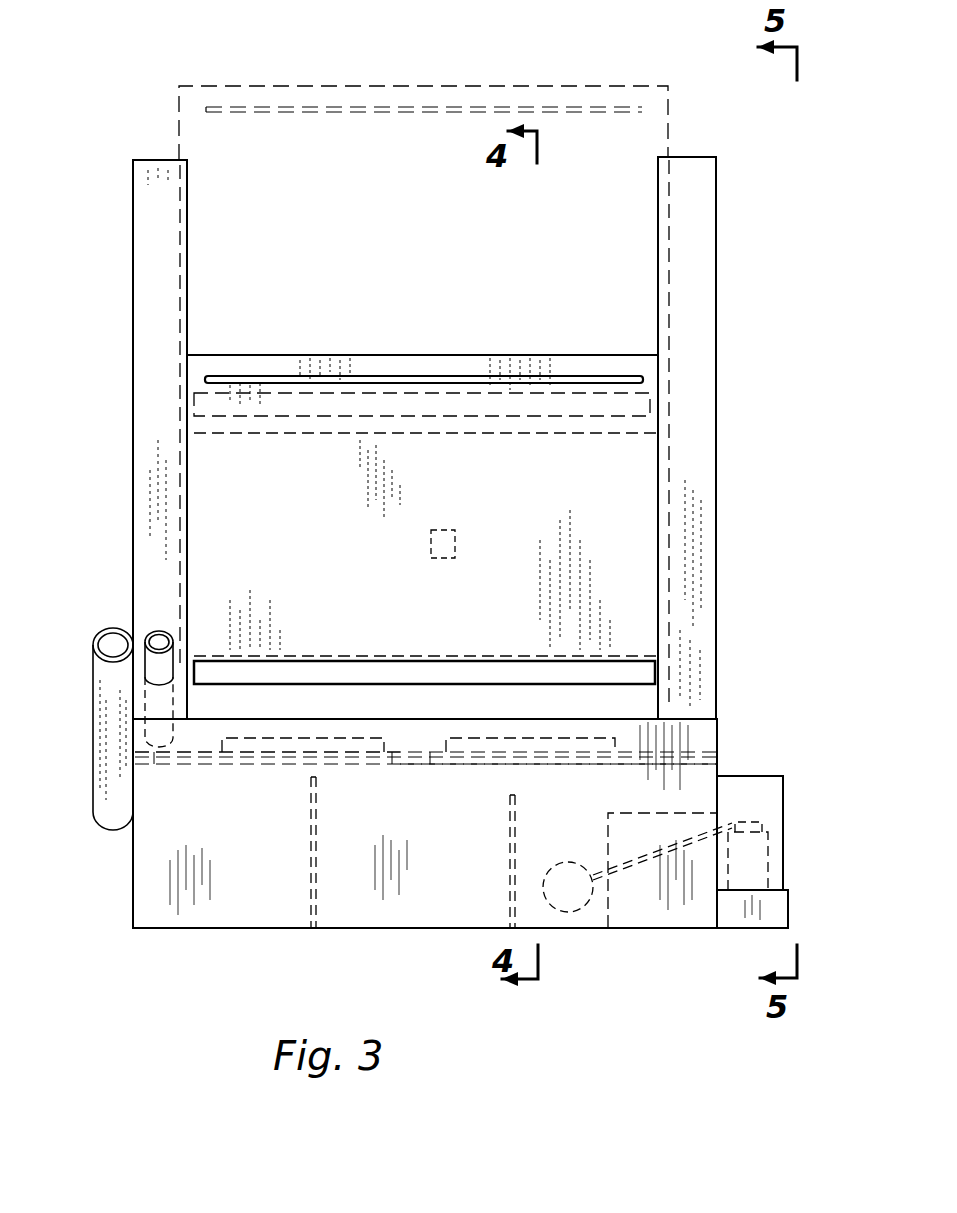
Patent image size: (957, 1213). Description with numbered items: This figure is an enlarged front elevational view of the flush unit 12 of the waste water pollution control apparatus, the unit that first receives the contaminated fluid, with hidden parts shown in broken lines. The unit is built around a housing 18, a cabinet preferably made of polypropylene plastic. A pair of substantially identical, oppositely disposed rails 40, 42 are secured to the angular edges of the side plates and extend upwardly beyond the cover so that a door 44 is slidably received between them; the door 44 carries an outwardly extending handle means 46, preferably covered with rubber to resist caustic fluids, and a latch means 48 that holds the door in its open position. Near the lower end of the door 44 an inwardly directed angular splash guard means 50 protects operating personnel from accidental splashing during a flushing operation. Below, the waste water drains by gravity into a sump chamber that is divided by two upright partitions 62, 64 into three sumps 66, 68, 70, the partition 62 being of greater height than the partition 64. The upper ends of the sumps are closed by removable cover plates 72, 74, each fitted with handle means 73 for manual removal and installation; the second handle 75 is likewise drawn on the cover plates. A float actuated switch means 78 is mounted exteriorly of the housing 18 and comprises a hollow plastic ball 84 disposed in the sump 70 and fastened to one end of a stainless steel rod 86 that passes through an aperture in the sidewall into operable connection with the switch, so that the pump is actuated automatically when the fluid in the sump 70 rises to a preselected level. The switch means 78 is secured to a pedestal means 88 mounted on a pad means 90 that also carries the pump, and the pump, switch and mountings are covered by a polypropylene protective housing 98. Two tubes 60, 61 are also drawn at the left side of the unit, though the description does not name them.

The flush unit 12 is at (158, 948).
The housing 18 is at (693, 670).
The rail 40 is at (152, 500).
The rail 42 is at (705, 590).
The door 44 is at (628, 472).
The handle means 46 is at (590, 374).
The latch means 48 is at (453, 534).
The splash guard means 50 is at (578, 678).
The small tube 60 is at (160, 632).
The large tube 61 is at (113, 628).
The partition 62 is at (318, 830).
The partition 64 is at (508, 862).
The sump 66 is at (230, 918).
The sump 68 is at (385, 905).
The sump 70 is at (597, 912).
The cover plate 72 is at (242, 766).
The handle means 73 is at (308, 738).
The cover plate 74 is at (510, 766).
The bracket 75 is at (455, 738).
The float actuated switch means 78 is at (747, 820).
The hollow plastic ball 84 is at (558, 863).
The stainless steel rod 86 is at (628, 864).
The pedestal means 88 is at (770, 874).
The pad means 90 is at (773, 910).
The protective housing 98 is at (783, 796).